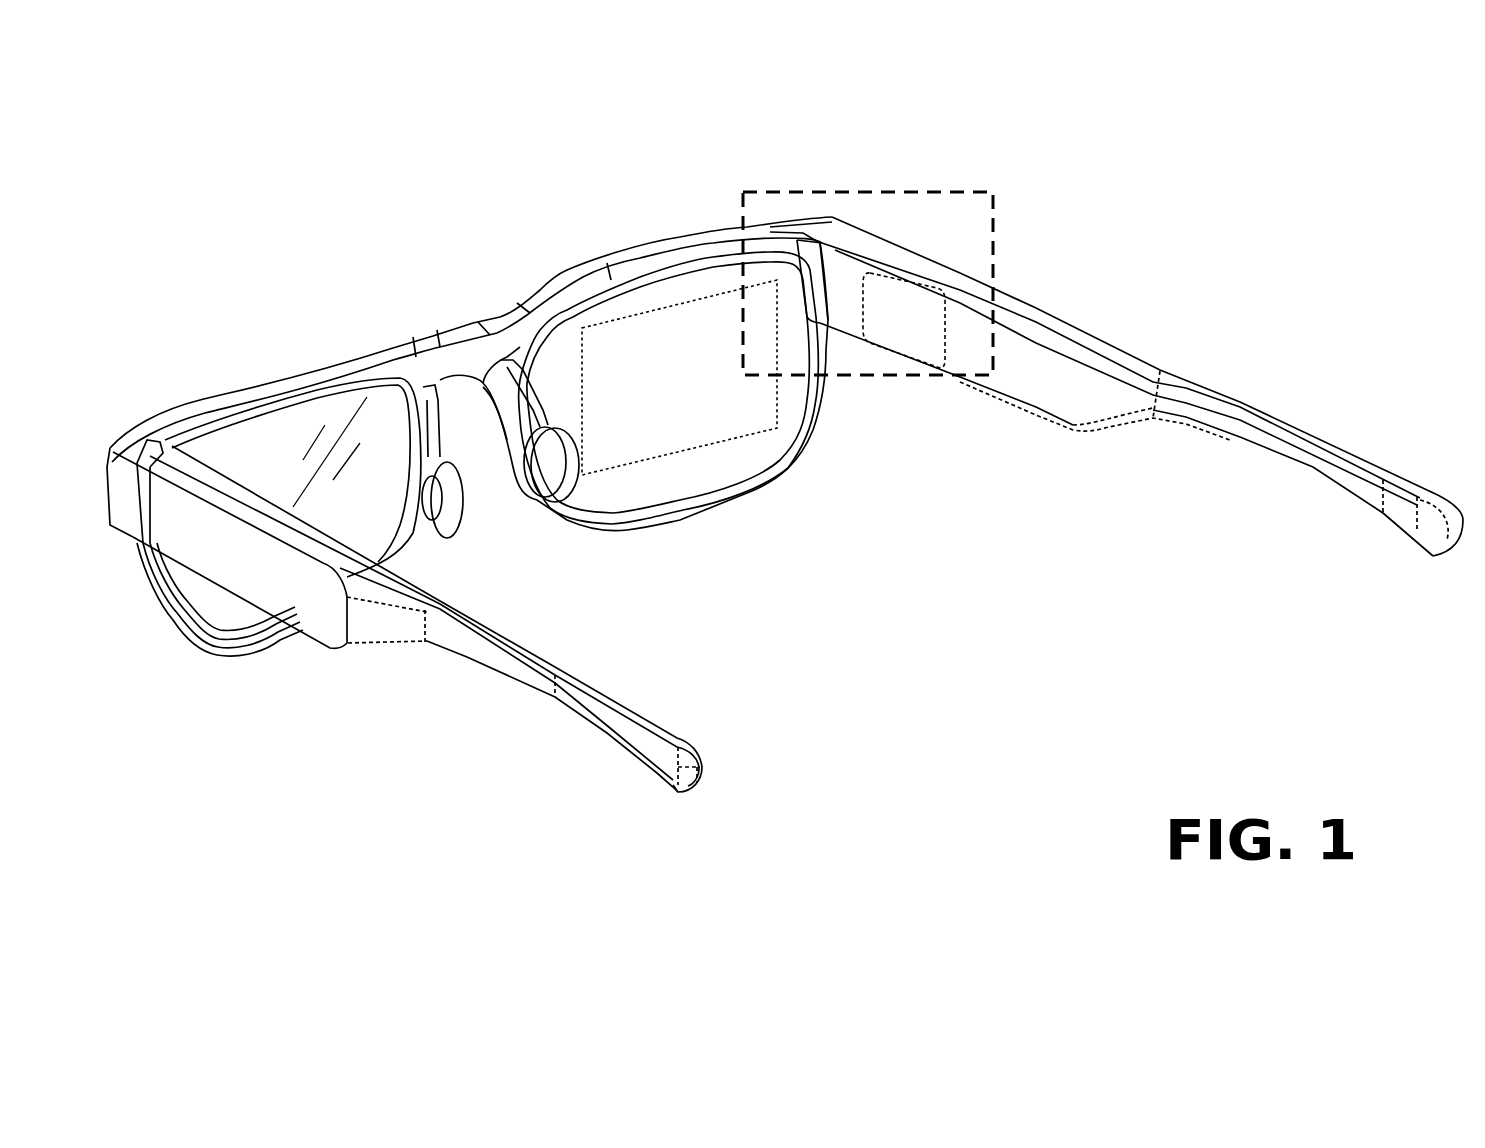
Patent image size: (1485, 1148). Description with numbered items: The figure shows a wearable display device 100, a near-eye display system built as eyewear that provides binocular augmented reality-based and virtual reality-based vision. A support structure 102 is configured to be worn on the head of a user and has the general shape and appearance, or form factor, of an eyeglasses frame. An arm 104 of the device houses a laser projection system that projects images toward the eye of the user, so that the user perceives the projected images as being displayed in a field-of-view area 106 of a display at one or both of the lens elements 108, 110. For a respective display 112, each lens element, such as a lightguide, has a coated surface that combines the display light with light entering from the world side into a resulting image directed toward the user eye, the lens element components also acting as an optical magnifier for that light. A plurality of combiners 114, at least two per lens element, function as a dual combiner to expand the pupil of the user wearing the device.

The wearable display device 100 is at (785, 464).
The support structure 102 is at (317, 640).
The arm 104 is at (1085, 332).
The field-of-view area 106 is at (665, 306).
The lens element 108 is at (258, 420).
The lens element 110 is at (687, 480).
The display 112 is at (922, 187).
The combiners 114 is at (654, 438).